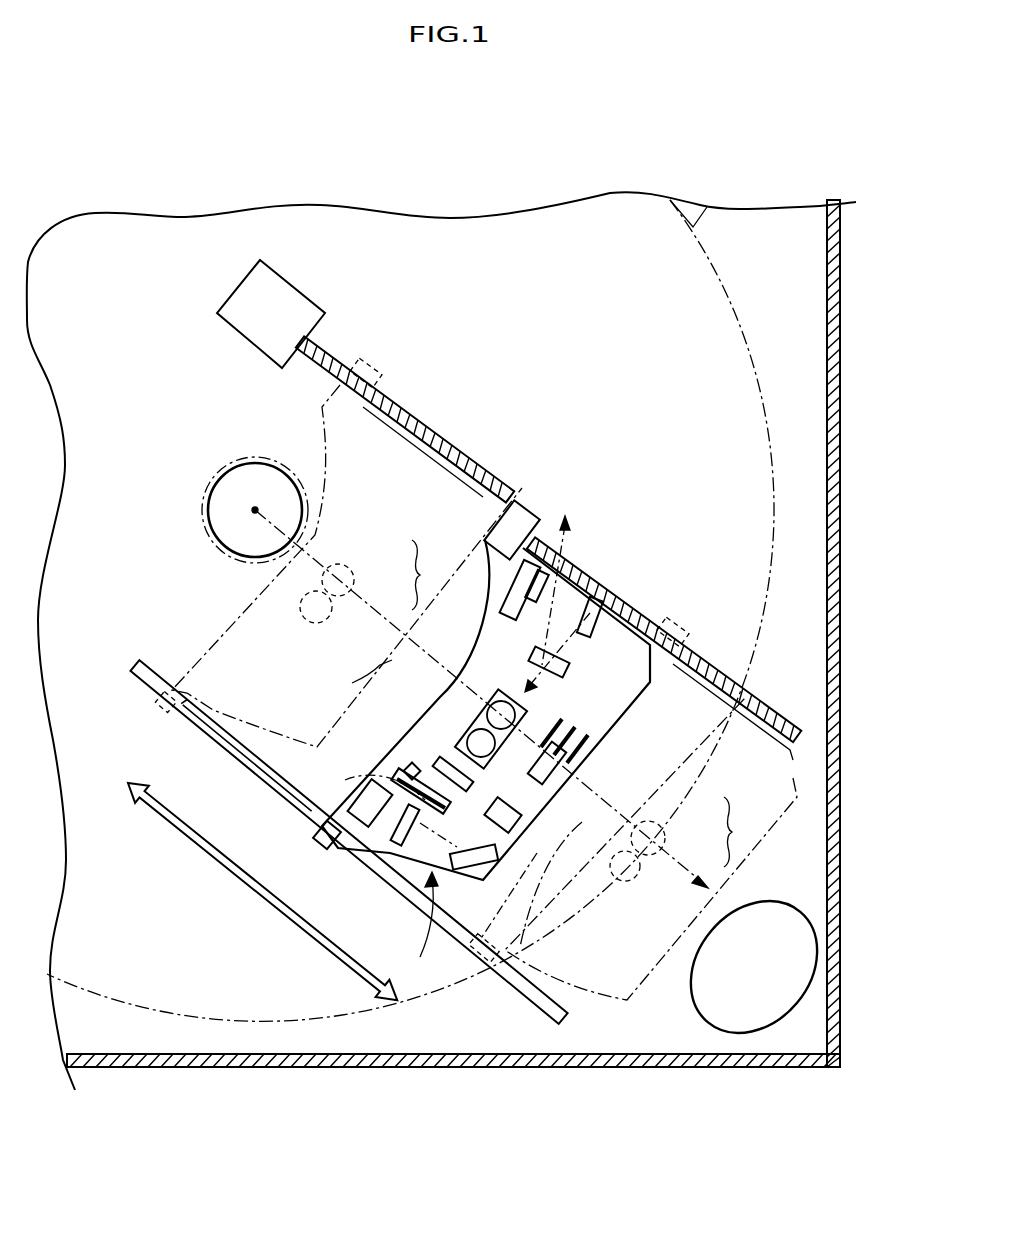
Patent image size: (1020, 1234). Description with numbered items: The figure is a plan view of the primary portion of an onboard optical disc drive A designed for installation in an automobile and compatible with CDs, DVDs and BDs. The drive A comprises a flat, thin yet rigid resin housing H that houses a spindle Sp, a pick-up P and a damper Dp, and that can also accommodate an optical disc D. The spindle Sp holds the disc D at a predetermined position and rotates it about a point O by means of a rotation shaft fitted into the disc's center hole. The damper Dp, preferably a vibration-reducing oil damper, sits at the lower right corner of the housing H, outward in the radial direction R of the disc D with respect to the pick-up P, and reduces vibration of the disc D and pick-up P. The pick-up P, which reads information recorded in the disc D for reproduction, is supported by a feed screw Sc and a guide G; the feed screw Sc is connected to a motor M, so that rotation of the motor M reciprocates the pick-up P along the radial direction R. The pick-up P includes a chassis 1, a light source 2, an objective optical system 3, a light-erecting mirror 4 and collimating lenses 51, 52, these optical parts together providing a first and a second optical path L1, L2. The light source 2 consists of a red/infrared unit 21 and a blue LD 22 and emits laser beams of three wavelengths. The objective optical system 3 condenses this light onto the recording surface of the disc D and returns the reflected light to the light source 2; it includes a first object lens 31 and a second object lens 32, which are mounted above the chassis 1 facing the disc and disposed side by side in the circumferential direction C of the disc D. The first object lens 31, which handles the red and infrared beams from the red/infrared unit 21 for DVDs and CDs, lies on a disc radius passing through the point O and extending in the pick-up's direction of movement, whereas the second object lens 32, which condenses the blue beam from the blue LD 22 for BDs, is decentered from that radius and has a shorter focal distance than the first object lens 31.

The optical disc drive A is at (148, 203).
The optical disc D is at (707, 207).
The damper Dp is at (793, 950).
The housing H is at (842, 377).
The motor M is at (284, 296).
The feed screw Sc is at (492, 497).
The spindle Sp is at (233, 480).
The point (rotation center) O is at (254, 511).
The circumferential direction C is at (573, 540).
The guide G is at (283, 793).
The pick-up P is at (421, 931).
The radial direction R is at (481, 717).
The first optical path L1 is at (567, 661).
The second optical path L2 is at (455, 857).
The chassis 1 is at (213, 626).
The light source 2 is at (348, 842).
The red/infrared unit 21 is at (512, 560).
The blue LD 22 is at (563, 760).
The objective optical system 3 is at (552, 703).
The first object lens 31 is at (352, 568).
The second object lens 32 is at (330, 600).
The light-erecting mirror 4 is at (490, 685).
The collimating lens 51 is at (503, 615).
The collimating lens 52 is at (395, 778).